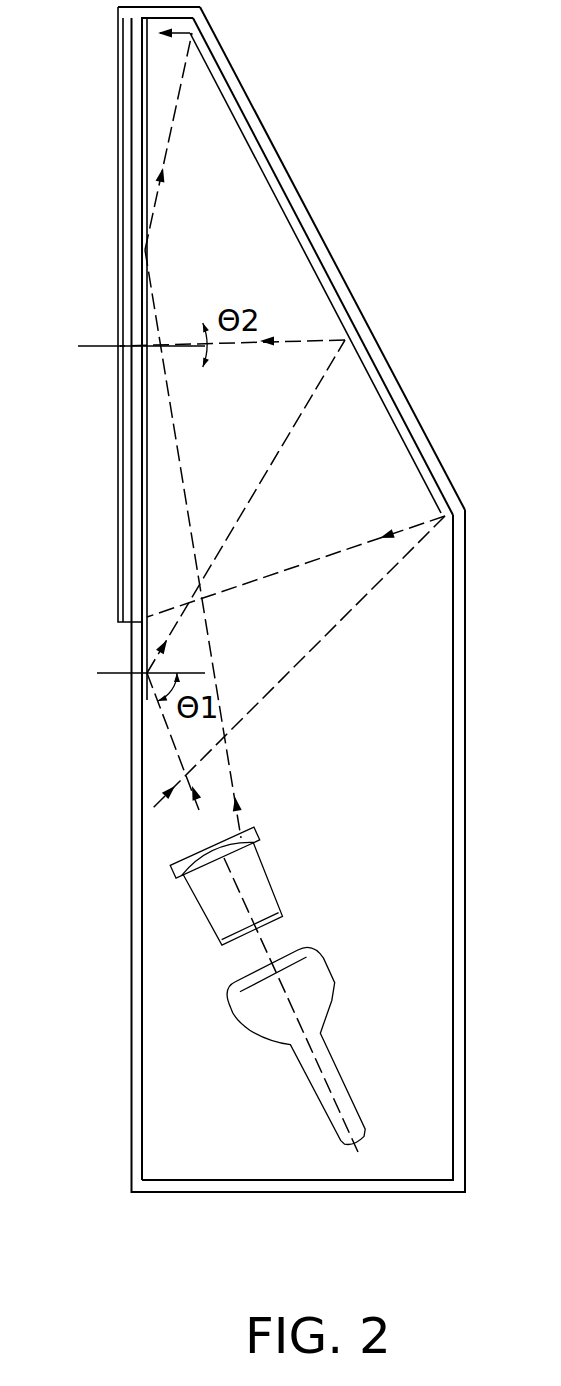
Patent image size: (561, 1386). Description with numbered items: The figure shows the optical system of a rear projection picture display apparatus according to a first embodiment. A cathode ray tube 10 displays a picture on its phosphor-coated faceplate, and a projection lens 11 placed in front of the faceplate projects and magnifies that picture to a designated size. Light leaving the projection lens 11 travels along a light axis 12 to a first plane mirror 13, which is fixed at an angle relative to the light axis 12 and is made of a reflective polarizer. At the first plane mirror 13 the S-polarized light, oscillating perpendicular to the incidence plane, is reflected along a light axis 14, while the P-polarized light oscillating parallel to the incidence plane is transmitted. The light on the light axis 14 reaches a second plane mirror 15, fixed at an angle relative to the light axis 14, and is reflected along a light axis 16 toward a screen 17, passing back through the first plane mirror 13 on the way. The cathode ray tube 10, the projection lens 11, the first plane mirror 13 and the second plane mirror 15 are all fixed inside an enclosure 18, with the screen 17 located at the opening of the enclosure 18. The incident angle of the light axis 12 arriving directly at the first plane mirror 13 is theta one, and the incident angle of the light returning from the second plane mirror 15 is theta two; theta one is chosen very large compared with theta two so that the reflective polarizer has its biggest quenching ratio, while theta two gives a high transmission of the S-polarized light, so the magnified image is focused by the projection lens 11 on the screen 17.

The cathode ray tube 10 is at (333, 1000).
The projection lens 11 is at (283, 898).
The light axis 12 is at (217, 847).
The first plane mirror 13 is at (141, 745).
The light axis 14 is at (343, 352).
The second plane mirror 15 is at (393, 407).
The light axis 16 is at (340, 338).
The screen 17 is at (123, 260).
The enclosure 18 is at (137, 150).